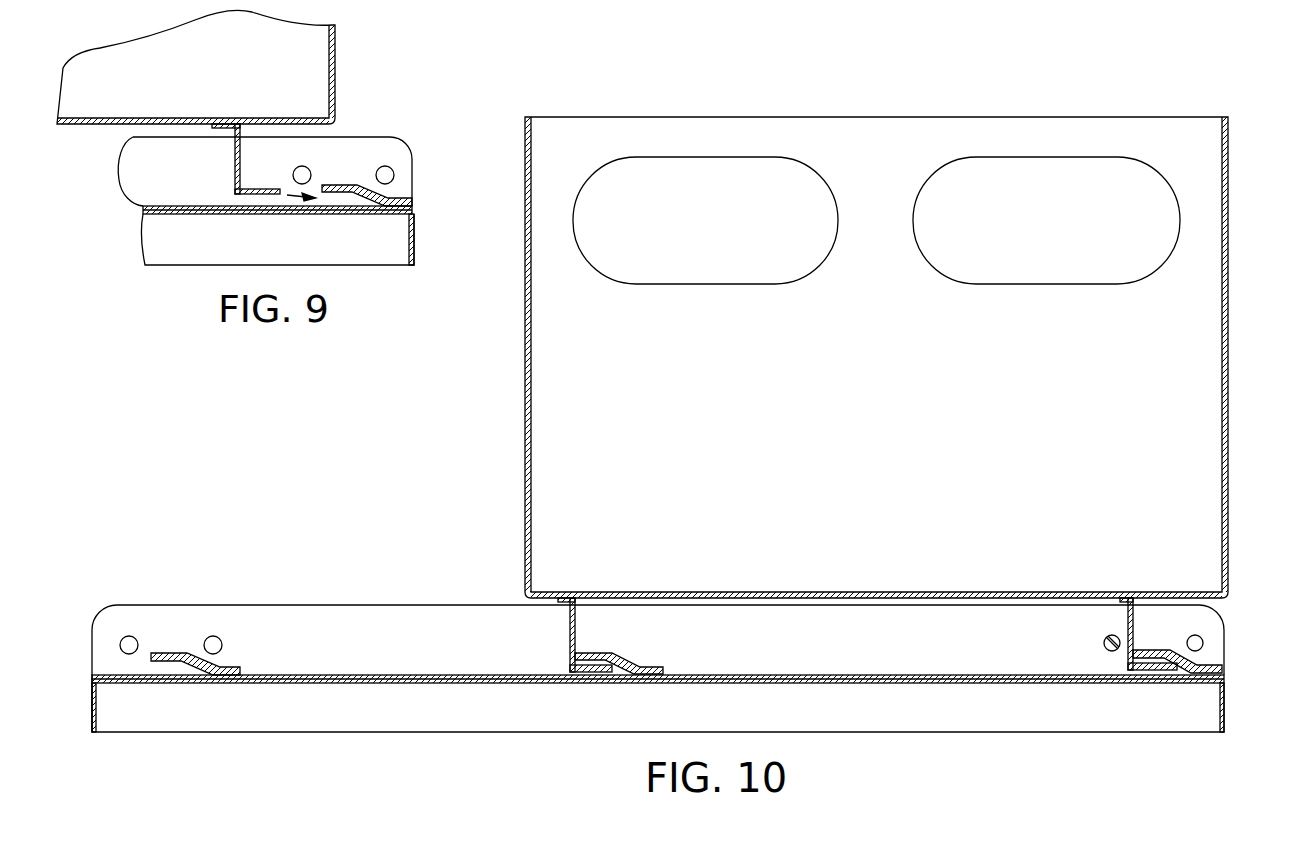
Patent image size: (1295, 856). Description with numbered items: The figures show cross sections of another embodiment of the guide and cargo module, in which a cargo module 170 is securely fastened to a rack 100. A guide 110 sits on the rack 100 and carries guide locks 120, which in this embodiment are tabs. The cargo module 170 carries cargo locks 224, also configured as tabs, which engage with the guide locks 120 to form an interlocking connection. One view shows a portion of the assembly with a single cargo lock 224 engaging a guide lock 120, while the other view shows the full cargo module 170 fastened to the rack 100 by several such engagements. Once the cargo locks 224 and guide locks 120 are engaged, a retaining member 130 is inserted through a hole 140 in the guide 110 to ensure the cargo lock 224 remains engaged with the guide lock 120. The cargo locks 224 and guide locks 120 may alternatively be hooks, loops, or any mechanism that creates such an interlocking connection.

In FIG. 9, the rack 100 is at (428, 243).
In FIG. 10, the rack 100 is at (1238, 710).
In FIG. 9, the guide 110 is at (368, 128).
In FIG. 10, the guide 110 is at (357, 594).
In FIG. 9, the guide lock 120 is at (390, 208).
In FIG. 10, the guide lock 120 is at (223, 680).
In FIG. 10, the retaining member 130 is at (1104, 642).
In FIG. 9, the hole 140 is at (304, 175).
In FIG. 10, the hole 140 is at (209, 641).
In FIG. 9, the cargo module 170 is at (243, 84).
In FIG. 10, the cargo module 170 is at (897, 419).
In FIG. 9, the cargo lock 224 is at (235, 162).
In FIG. 10, the cargo lock 224 is at (569, 640).